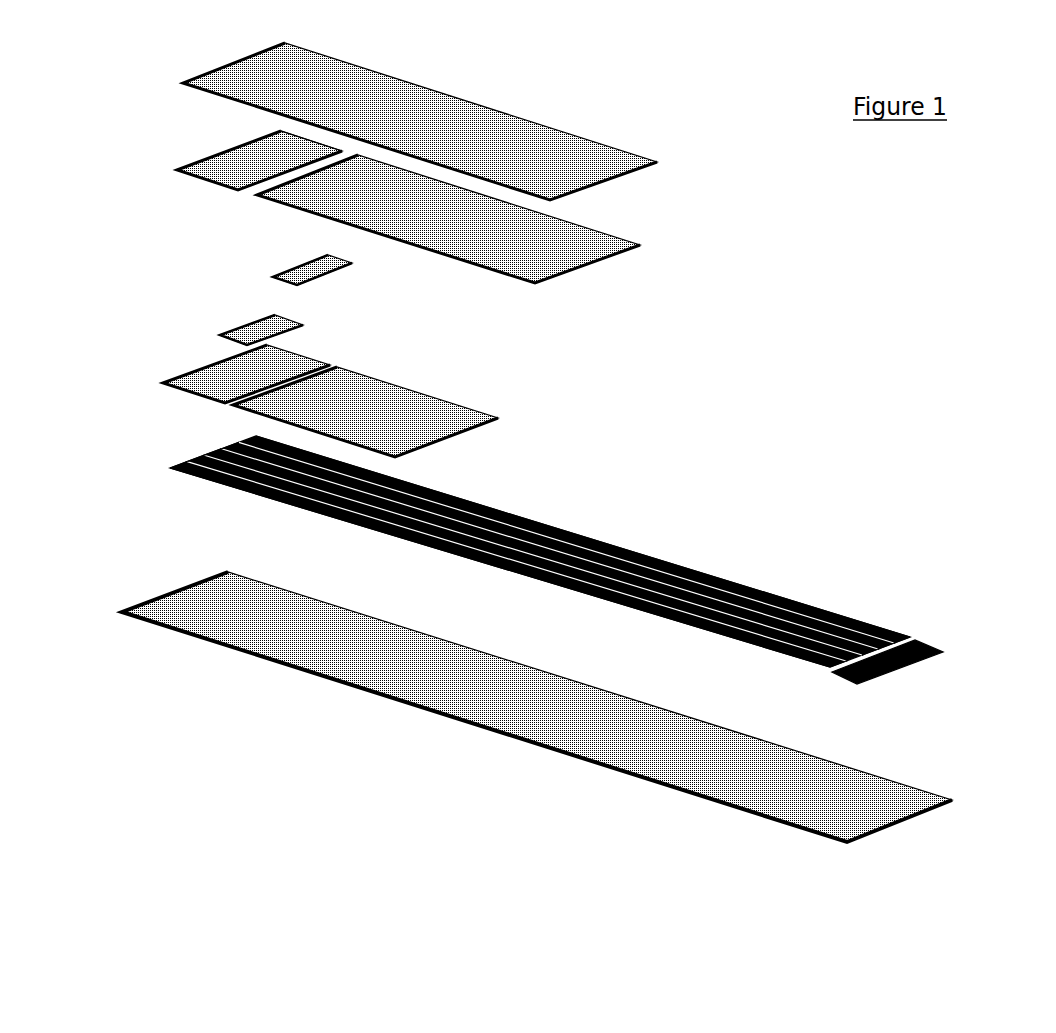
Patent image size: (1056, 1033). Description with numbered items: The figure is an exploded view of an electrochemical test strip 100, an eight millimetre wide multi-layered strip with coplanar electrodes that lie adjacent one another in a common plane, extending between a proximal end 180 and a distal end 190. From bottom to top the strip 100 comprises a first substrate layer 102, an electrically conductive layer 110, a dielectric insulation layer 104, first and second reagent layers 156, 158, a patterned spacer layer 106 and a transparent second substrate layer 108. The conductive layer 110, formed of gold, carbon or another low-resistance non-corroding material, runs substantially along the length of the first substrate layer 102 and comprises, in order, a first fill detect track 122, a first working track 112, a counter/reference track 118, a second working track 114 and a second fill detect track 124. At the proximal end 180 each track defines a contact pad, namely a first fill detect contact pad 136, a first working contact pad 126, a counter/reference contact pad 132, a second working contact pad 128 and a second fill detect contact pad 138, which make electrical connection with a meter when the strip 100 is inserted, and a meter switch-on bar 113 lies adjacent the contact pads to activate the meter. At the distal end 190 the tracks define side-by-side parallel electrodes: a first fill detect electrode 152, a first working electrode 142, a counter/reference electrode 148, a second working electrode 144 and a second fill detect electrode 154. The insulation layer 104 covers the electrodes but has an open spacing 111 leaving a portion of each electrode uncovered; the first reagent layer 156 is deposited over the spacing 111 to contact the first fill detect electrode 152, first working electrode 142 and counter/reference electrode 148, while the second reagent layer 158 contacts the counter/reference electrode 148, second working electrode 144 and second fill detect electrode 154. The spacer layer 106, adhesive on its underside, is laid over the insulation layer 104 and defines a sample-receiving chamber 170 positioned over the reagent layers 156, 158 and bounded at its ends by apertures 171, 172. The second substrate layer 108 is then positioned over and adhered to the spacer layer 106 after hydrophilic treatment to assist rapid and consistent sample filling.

The test strip 100 is at (810, 347).
The first substrate layer 102 is at (562, 733).
The dielectric insulation layer 104 is at (457, 420).
The patterned spacer layer 106 is at (605, 242).
The second substrate layer 108 is at (607, 162).
The electrically conductive layer 110 is at (525, 559).
The spacing 111 is at (283, 380).
The first working track 112 is at (580, 578).
The meter switch-on bar 113 is at (942, 653).
The second working track 114 is at (555, 547).
The counter/reference track 118 is at (493, 538).
The first fill detect track 122 is at (497, 565).
The second fill detect track 124 is at (628, 555).
The first working contact pad 126 is at (838, 662).
The second working contact pad 128 is at (870, 643).
The counter/reference contact pad 132 is at (857, 653).
The first fill detect contact pad 136 is at (823, 665).
The second fill detect contact pad 138 is at (910, 638).
The first working electrode 142 is at (258, 478).
The second working electrode 144 is at (288, 460).
The counter/reference electrode 148 is at (280, 473).
The first fill detect electrode 152 is at (253, 485).
The second fill detect electrode 154 is at (257, 438).
The first reagent layer 156 is at (283, 327).
The second reagent layer 158 is at (307, 268).
The sample-receiving chamber 170 is at (337, 158).
The aperture 171 is at (250, 190).
The aperture 172 is at (333, 149).
The proximal end 180 is at (908, 822).
The distal end 190 is at (185, 583).